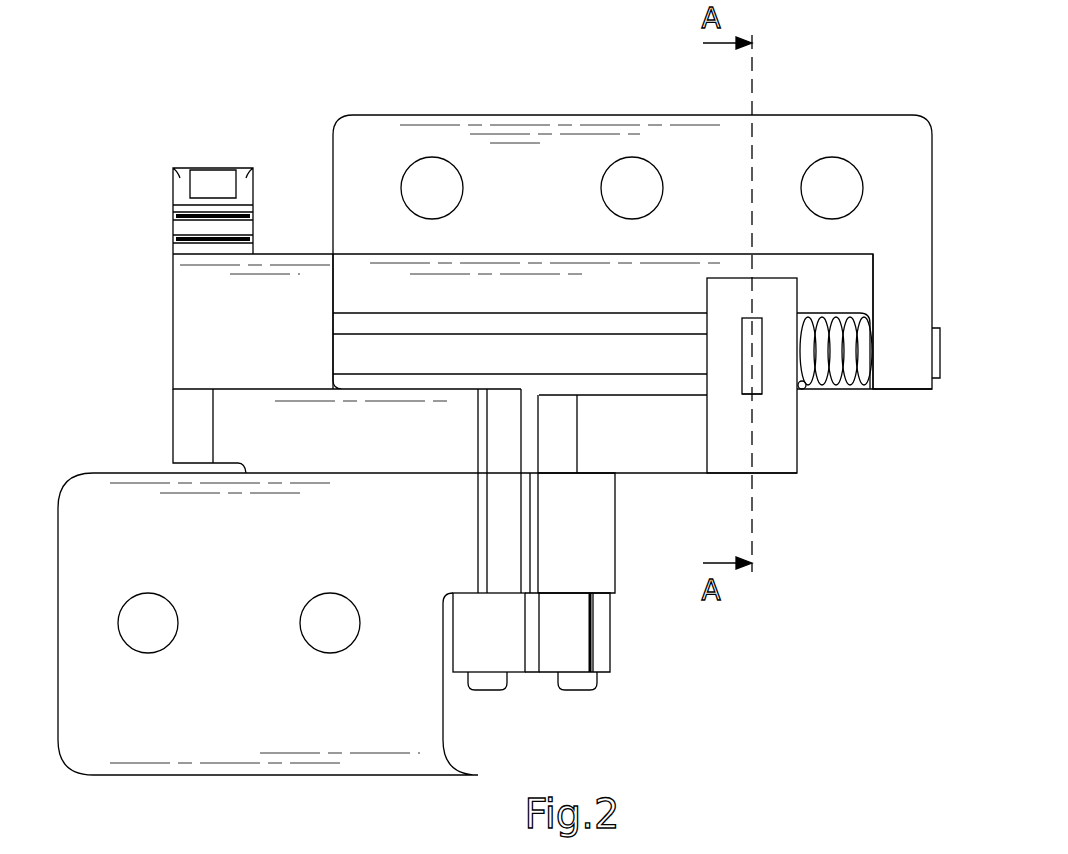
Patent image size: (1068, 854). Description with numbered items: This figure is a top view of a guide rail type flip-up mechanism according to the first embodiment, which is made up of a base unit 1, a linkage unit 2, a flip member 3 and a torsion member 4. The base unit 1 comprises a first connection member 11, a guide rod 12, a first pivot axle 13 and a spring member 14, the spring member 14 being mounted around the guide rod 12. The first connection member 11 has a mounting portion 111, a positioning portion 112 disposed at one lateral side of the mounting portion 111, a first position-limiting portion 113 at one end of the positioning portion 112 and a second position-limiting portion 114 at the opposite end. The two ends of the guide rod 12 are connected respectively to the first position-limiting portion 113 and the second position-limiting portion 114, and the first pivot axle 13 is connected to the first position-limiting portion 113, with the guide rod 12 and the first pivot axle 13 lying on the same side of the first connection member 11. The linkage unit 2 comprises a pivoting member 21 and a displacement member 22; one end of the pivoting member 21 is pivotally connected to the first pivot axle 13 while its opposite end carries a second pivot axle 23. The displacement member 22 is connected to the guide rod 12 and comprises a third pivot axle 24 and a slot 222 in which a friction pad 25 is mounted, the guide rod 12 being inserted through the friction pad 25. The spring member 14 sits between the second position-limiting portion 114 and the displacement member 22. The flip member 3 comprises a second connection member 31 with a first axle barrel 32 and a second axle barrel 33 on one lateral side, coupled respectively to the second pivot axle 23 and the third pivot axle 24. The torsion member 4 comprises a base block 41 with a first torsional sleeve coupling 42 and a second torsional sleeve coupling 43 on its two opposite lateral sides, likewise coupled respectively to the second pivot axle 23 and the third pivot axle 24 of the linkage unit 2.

The base unit 1 is at (558, 251).
The first connection member 11 is at (547, 113).
The mounting portion 111 is at (877, 140).
The positioning portion 112 is at (835, 290).
The first position-limiting portion 113 is at (200, 303).
The second position-limiting portion 114 is at (905, 308).
The guide rod 12 is at (598, 350).
The first pivot axle 13 is at (215, 178).
The spring member 14 is at (858, 387).
The linkage unit 2 is at (489, 519).
The pivoting member 21 is at (230, 440).
The displacement member 22 is at (780, 462).
The slot 222 is at (745, 345).
The second pivot axle 23 is at (488, 690).
The third pivot axle 24 is at (578, 690).
The friction pad 25 is at (748, 395).
The flip member 3 is at (427, 614).
The second connection member 31 is at (268, 752).
The first axle barrel 32 is at (500, 530).
The second axle barrel 33 is at (590, 525).
The torsion member 4 is at (544, 664).
The base block 41 is at (530, 640).
The first torsional sleeve coupling 42 is at (470, 632).
The second torsional sleeve coupling 43 is at (605, 650).